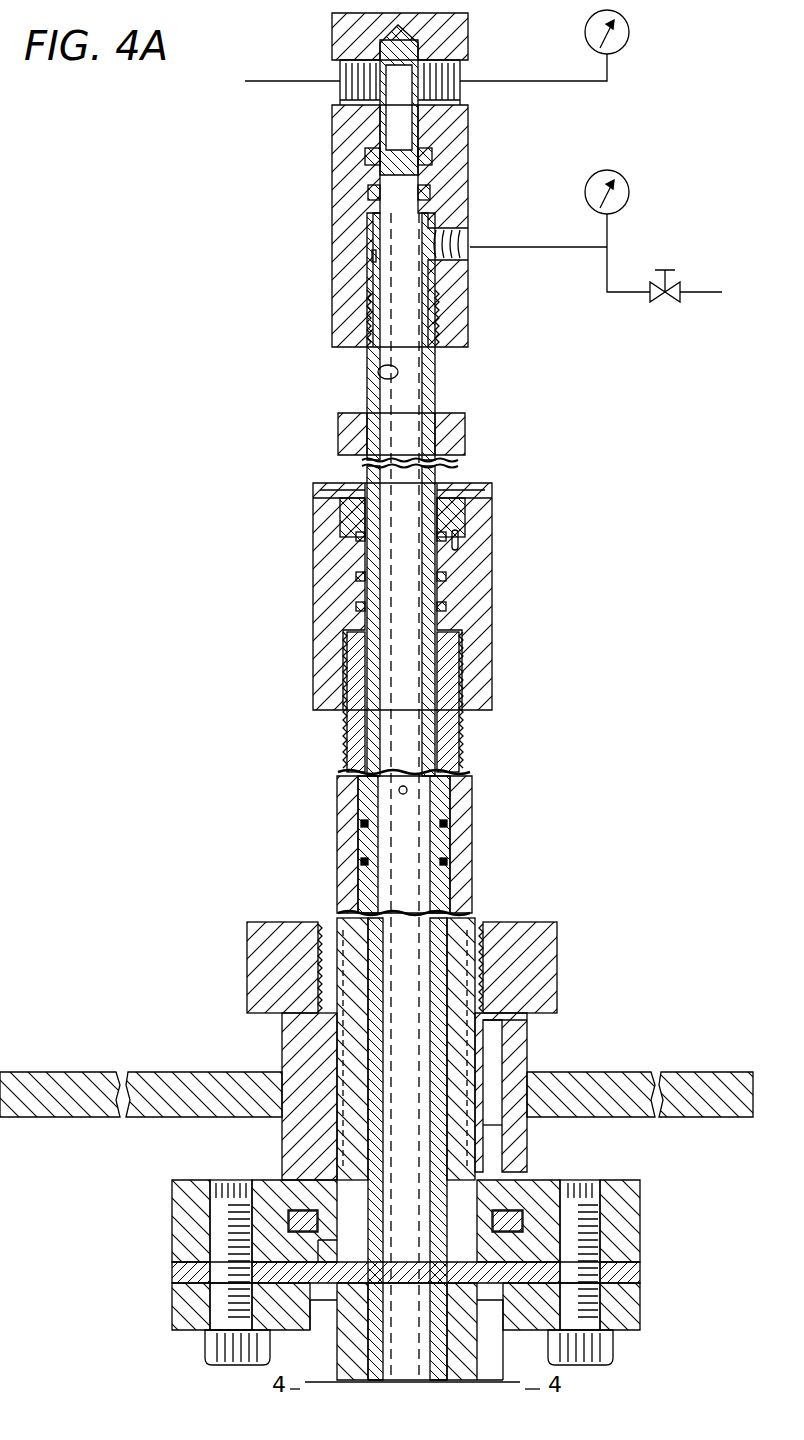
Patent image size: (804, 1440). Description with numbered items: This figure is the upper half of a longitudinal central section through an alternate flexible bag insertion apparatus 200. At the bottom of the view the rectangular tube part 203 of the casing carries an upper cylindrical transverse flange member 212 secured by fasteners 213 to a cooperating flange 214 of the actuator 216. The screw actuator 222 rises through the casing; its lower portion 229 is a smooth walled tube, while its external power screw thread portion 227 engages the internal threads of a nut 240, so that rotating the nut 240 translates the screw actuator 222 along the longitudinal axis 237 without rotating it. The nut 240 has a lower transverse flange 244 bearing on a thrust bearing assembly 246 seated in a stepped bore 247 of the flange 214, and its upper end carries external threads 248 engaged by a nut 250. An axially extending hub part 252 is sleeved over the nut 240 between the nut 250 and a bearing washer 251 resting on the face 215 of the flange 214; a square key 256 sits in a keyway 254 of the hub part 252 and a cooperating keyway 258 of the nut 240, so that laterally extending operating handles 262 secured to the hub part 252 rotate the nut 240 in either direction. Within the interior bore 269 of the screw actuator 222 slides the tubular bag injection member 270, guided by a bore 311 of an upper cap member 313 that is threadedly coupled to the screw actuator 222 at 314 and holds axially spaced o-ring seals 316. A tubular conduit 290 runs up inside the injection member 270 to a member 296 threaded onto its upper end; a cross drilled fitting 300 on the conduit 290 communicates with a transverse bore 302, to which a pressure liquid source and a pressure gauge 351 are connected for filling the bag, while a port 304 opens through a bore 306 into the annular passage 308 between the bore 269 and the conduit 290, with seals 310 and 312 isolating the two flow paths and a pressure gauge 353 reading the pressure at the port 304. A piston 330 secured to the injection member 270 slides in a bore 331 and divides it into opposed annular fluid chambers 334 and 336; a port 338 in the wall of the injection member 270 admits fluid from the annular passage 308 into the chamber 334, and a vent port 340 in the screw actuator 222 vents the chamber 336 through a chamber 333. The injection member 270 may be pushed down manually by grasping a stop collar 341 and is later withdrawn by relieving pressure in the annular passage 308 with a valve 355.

The bag insertion apparatus 200 is at (646, 931).
The rectangular tube part 203 is at (614, 1350).
The upper cylindrical transverse flange member 212 is at (642, 1290).
The fasteners 213 is at (215, 1310).
The cooperating flange 214 is at (640, 1190).
The face 215 is at (176, 1180).
The actuator 216 is at (472, 832).
The screw actuator 222 is at (466, 880).
The external power screw thread portion 227 is at (338, 788).
The lower portion 229 is at (242, 1346).
The longitudinal axis 237 is at (440, 738).
The nut 240 is at (526, 1048).
The lower transverse flange 244 is at (574, 1244).
The thrust bearing assembly 246 is at (512, 1220).
The stepped bore 247 is at (222, 1236).
The external threads 248 is at (490, 950).
The nut 250 is at (252, 962).
The bearing washer 251 is at (310, 1165).
The hub part 252 is at (292, 1100).
The keyway 254 is at (496, 1122).
The key 256 is at (496, 1140).
The keyway 258 is at (530, 1028).
The operating handles 262 is at (58, 1072).
The interior bore 269 is at (380, 697).
The bag injection member 270 is at (436, 380).
The conduit 290 is at (428, 316).
The member 296 is at (470, 174).
The cross drilled fitting 300 is at (432, 52).
The transverse bore 302 is at (366, 85).
The port 304 is at (466, 240).
The bore 306 is at (372, 262).
The annular passage 308 is at (380, 373).
The seal 310 is at (366, 156).
The bore 311 is at (378, 560).
The seal 312 is at (369, 193).
The upper cap member 313 is at (488, 646).
The threaded coupling 314 is at (347, 668).
The o-ring seals 316 is at (356, 538).
The piston 330 is at (366, 842).
The bore 331 is at (345, 940).
The chamber 333 is at (307, 1355).
The annular fluid chamber 334 is at (446, 793).
The annular fluid chamber 336 is at (345, 1046).
The port 338 is at (372, 810).
The vent port 340 is at (502, 1345).
The stop collar 341 is at (466, 433).
The pressure gauge 351 is at (631, 33).
The pressure gauge 353 is at (629, 195).
The valve 355 is at (672, 298).